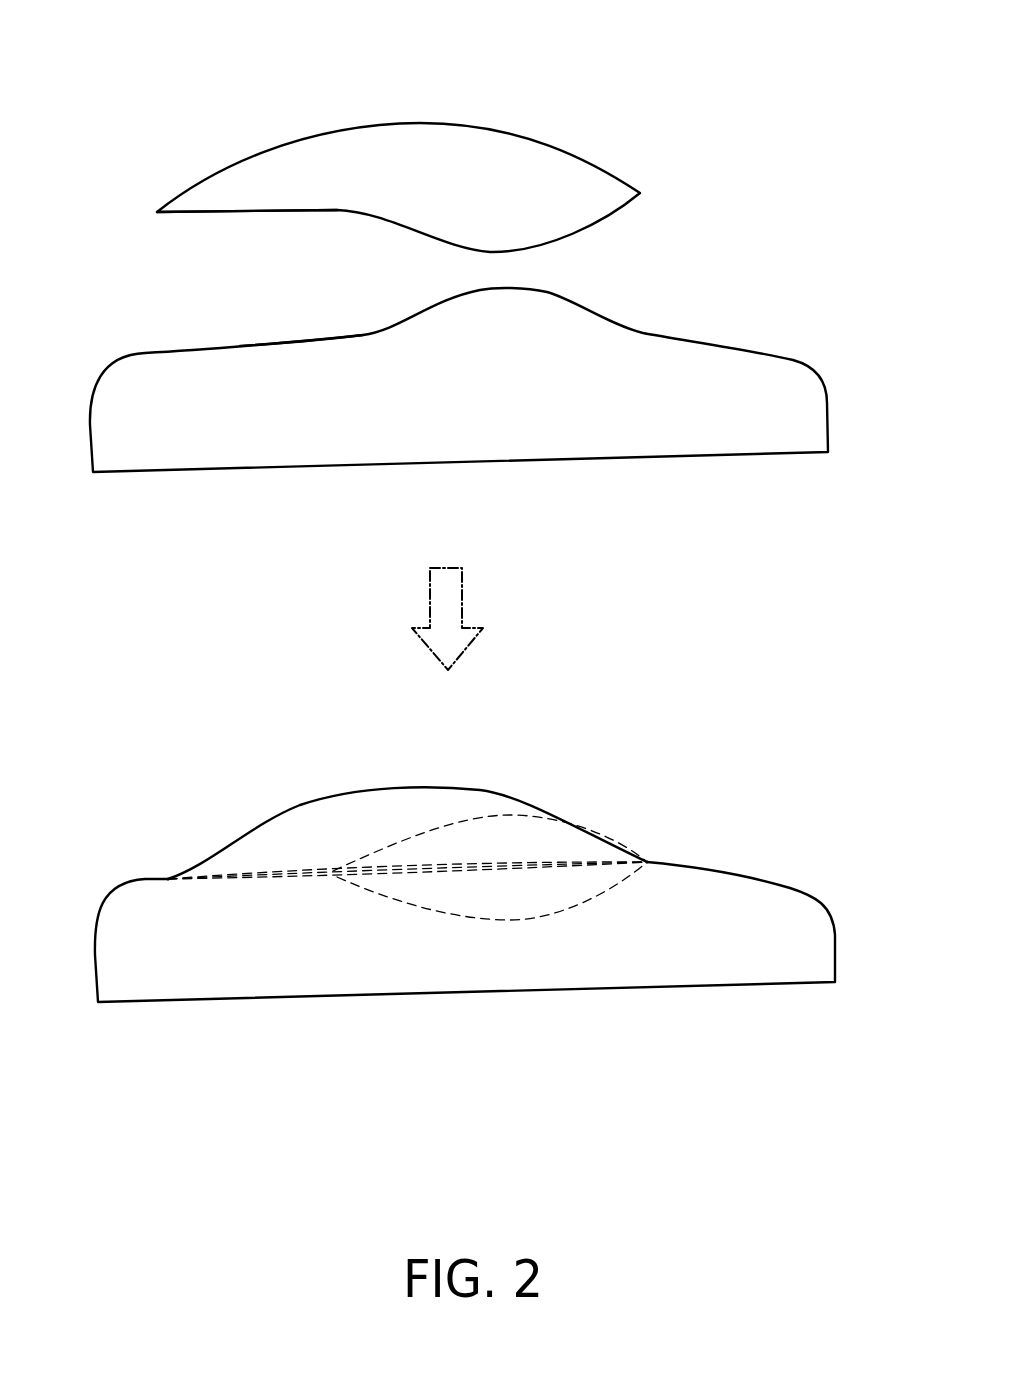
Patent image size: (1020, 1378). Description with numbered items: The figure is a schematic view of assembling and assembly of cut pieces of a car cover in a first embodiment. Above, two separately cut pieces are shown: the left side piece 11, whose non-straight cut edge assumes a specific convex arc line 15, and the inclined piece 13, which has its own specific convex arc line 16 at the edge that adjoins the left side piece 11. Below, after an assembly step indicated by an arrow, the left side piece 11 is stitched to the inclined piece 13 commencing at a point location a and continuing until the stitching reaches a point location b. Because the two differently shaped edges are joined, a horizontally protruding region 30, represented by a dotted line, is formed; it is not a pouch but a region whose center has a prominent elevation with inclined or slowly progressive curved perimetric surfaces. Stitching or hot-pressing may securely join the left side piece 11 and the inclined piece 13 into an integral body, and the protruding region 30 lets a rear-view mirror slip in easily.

The left side piece 11 is at (572, 425).
The inclined piece 13 is at (440, 135).
The convex arc line 15 is at (265, 345).
The convex arc line 16 is at (337, 212).
The protruding region 30 is at (498, 862).
The point location a is at (168, 879).
The point location b is at (648, 862).